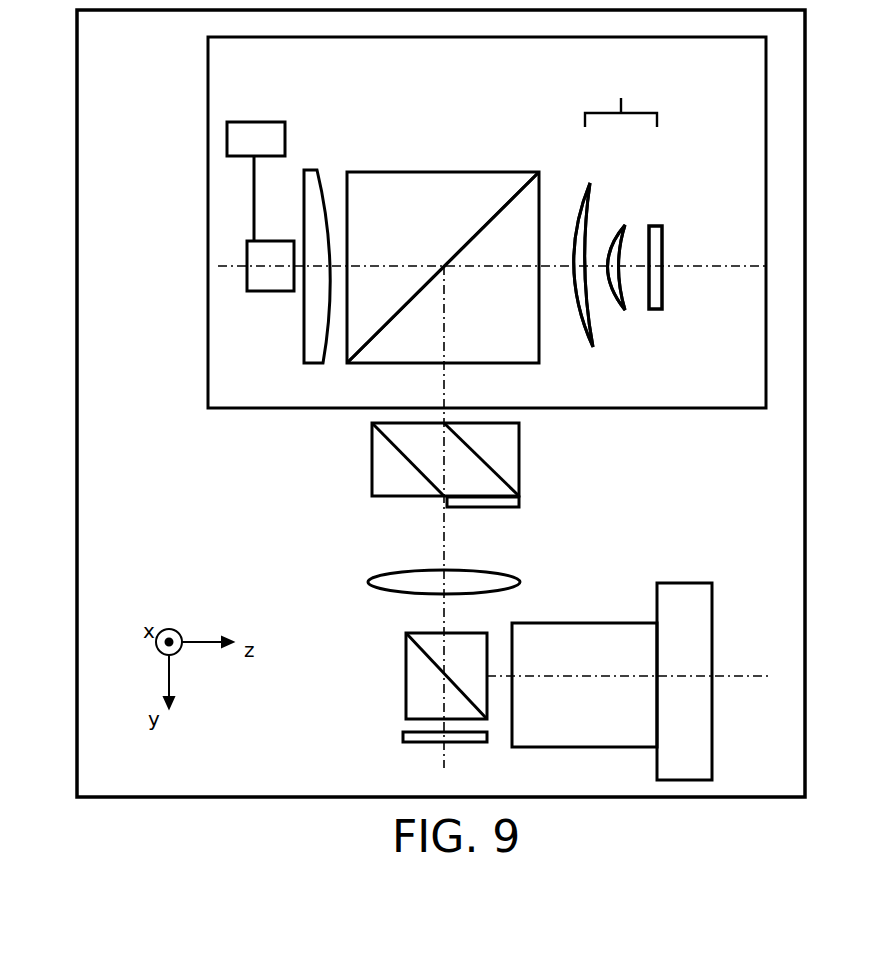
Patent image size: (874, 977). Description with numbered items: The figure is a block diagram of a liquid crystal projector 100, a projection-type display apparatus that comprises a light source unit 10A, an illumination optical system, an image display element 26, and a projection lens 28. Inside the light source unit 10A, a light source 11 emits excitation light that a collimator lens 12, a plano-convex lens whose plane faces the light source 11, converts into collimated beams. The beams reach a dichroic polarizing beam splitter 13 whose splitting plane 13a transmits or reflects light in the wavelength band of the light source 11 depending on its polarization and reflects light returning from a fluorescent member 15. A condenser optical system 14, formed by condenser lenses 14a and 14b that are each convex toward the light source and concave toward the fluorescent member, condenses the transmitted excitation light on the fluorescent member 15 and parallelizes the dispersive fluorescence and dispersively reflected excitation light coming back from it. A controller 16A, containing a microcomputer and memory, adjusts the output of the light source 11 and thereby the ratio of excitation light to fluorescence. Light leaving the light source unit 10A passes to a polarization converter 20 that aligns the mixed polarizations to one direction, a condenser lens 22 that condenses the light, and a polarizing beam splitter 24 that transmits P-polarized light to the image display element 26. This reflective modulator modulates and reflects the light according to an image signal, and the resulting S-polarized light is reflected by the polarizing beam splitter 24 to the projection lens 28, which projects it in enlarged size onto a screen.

The liquid crystal projector 100 is at (78, 657).
The light source unit 10A is at (264, 408).
The light source 11 is at (280, 279).
The collimator lens 12 is at (320, 189).
The dichroic polarizing beam splitter 13 is at (432, 180).
The splitting plane 13a is at (524, 182).
The condenser optical system 14 is at (615, 209).
The condenser lens 14a is at (588, 190).
The condenser lens 14b is at (606, 236).
The fluorescent member 15 is at (662, 230).
The controller 16A is at (262, 146).
The polarization converter 20 is at (512, 459).
The condenser lens 22 is at (370, 582).
The polarizing beam splitter 24 is at (418, 705).
The image display element 26 is at (407, 734).
The projection lens 28 is at (582, 638).